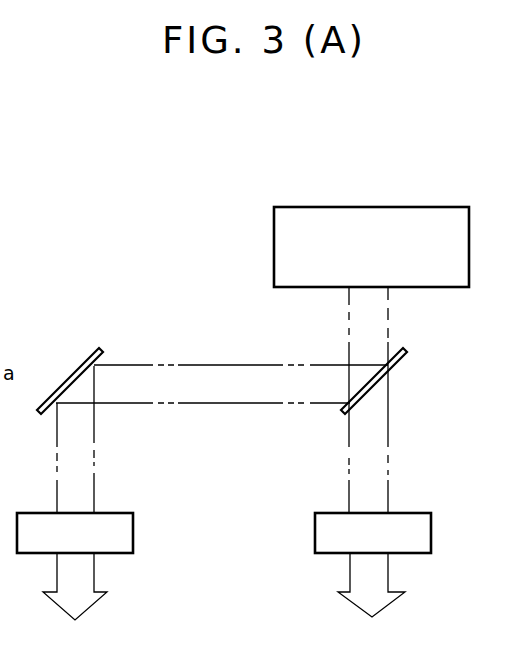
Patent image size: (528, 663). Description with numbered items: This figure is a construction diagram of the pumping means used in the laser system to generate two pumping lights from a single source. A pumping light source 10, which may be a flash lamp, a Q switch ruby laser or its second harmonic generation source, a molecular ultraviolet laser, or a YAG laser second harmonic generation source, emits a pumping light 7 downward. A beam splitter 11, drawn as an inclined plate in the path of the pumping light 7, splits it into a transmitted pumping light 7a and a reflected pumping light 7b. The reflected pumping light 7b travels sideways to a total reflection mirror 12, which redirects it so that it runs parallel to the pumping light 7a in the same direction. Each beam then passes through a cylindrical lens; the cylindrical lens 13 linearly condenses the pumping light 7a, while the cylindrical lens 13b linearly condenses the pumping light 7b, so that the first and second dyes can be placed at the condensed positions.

The pumping light source 10 is at (432, 208).
The pumping light 7 is at (388, 303).
The beam splitter 11 is at (403, 365).
The total reflection mirror 12 is at (73, 368).
The cylindrical lens 13 is at (418, 537).
The cylindrical lens 13b is at (127, 536).
The pumping light 7a is at (387, 603).
The pumping light 7b is at (88, 607).